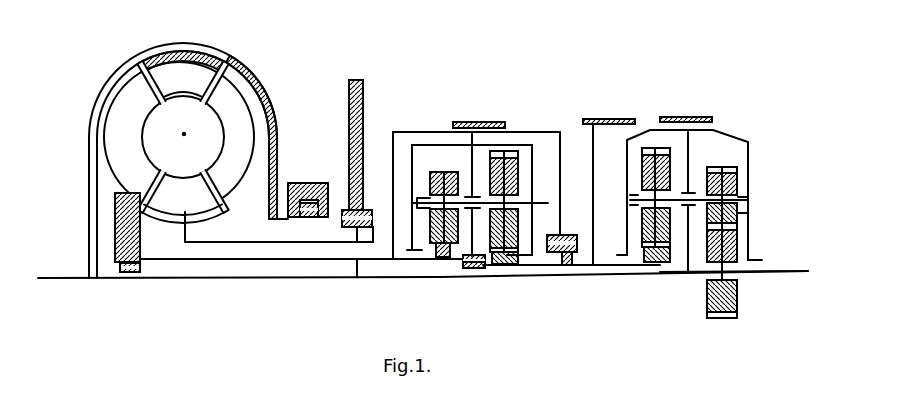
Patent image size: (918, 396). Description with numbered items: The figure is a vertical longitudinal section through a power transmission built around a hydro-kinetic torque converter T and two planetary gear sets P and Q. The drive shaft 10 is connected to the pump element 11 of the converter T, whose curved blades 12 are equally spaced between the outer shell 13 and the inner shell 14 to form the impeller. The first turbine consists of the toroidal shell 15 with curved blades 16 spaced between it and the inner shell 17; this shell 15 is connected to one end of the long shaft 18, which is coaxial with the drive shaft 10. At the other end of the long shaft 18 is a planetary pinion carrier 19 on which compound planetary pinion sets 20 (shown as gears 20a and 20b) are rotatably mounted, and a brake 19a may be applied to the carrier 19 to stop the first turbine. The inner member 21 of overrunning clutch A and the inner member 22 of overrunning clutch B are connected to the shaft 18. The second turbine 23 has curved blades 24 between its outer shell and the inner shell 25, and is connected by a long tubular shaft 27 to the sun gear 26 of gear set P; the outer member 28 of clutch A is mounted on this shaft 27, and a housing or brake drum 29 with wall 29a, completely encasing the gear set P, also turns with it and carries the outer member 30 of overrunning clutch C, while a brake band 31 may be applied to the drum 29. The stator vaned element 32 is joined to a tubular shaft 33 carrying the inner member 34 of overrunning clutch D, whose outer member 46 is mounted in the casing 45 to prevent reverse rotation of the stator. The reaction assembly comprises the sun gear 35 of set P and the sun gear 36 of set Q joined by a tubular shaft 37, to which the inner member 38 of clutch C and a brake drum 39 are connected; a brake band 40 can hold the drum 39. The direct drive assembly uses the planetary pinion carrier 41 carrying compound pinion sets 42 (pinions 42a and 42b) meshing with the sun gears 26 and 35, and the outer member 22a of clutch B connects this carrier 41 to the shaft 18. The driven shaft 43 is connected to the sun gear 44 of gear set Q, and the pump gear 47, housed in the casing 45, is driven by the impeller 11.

The hydro-kinetic torque converter T is at (105, 82).
The drive shaft 10 is at (63, 277).
The pump element 11 is at (257, 73).
The curved blades 12 is at (247, 163).
The outer shell 13 is at (273, 125).
The inner shell 14 is at (224, 135).
The toroidal shell 15 is at (184, 57).
The curved blades 16 is at (187, 88).
The inner shell 17 is at (191, 100).
The long shaft 18 is at (293, 278).
The planetary pinion carrier 19 is at (688, 148).
The brake 19a is at (688, 117).
The compound planetary pinion sets 20 is at (748, 213).
The gear 20a is at (647, 147).
The gear 20b is at (725, 168).
The inner member of overrunning clutch A 21 is at (126, 273).
The inner member of overrunning clutch B 22 is at (487, 268).
The outer member of overrunning clutch B 22a is at (462, 256).
The second turbine 23 is at (100, 137).
The curved blades 24 is at (140, 178).
The inner shell 25 is at (142, 135).
The sun gear 26 is at (440, 250).
The long tubular shaft 27 is at (357, 281).
The outer member of overrunning clutch A 28 is at (140, 247).
The housing or brake drum 29 is at (440, 130).
The carrier wall 29a is at (392, 153).
The outer member of overrunning clutch C 30 is at (577, 236).
The brake band 31 is at (485, 121).
The vaned element 32 is at (193, 210).
The tubular shaft 33 is at (258, 237).
The inner member of overrunning clutch D 34 is at (372, 241).
The sun gear 35 is at (497, 264).
The sun gear 36 is at (663, 262).
The tubular shaft 37 is at (548, 267).
The inner member of overrunning clutch C 38 is at (578, 253).
The brake drum 39 is at (593, 182).
The brake band 40 is at (613, 107).
The planetary pinion carrier 41 is at (470, 155).
The compound planetary pinion sets 42 is at (428, 200).
The gear 42a is at (456, 171).
The gear 42b is at (510, 153).
The driven shaft 43 is at (800, 268).
The sun gear 44 is at (727, 300).
The casing 45 is at (310, 182).
The outer member of overrunning clutch D 46 is at (347, 210).
The pump gear 47 is at (308, 217).
The overrunning clutch A is at (141, 268).
The overrunning clutch B is at (466, 262).
The overrunning clutch C is at (577, 243).
The overrunning clutch D is at (377, 222).
The first planetary gear set P is at (418, 132).
The planetary gear set Q is at (735, 132).